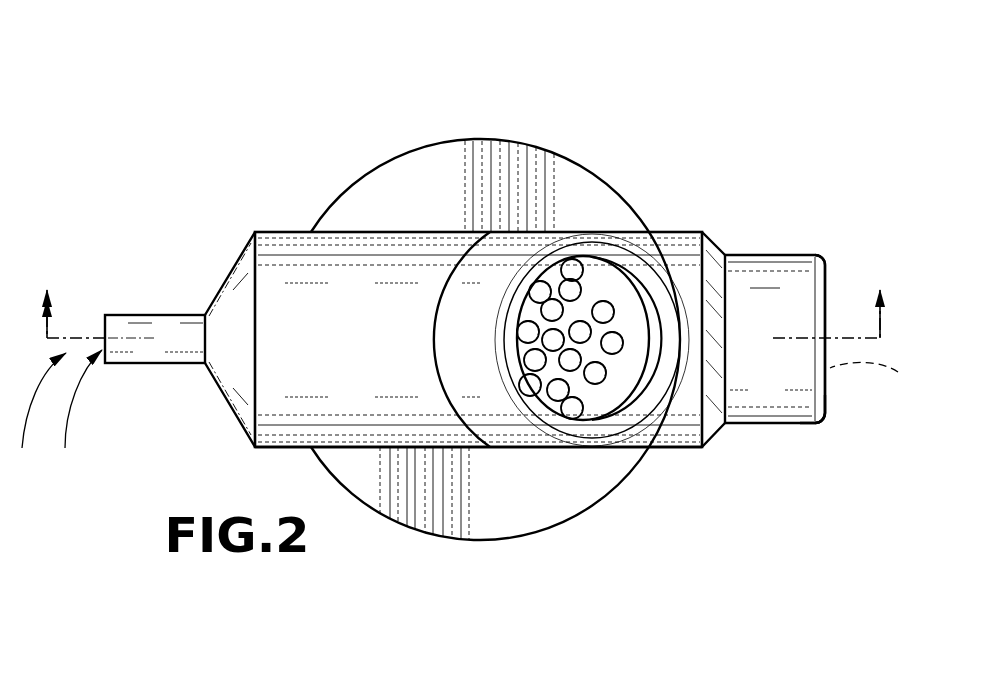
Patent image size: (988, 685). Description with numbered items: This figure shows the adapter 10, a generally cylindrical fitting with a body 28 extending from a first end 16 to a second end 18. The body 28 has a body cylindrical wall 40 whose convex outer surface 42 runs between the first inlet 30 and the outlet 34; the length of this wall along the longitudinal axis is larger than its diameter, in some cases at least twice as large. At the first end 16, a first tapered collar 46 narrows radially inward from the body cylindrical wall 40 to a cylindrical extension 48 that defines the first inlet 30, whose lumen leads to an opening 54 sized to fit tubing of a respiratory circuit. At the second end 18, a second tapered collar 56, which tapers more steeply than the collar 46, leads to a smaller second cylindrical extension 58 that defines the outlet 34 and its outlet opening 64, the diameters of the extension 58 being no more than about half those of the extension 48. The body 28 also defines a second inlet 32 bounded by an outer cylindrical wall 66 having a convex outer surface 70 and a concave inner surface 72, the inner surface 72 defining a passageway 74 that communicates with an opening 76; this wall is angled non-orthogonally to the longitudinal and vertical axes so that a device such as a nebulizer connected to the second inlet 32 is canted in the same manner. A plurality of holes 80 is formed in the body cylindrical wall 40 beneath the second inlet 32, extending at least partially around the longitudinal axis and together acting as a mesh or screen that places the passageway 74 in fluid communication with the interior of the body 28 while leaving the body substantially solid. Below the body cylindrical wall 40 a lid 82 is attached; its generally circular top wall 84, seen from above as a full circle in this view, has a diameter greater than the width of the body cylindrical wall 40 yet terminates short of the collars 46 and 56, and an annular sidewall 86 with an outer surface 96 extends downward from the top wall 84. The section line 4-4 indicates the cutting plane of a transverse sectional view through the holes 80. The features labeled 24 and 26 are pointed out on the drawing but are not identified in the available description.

The adapter 10 is at (719, 121).
The first end 16 is at (838, 280).
The second end 18 is at (38, 415).
The lower housing portion 24 is at (477, 556).
The upper housing portion 26 is at (477, 118).
The body 28 is at (415, 345).
The first inlet 30 is at (832, 396).
The second inlet 32 is at (655, 270).
The outlet 34 is at (77, 399).
The body cylindrical wall 40 is at (284, 228).
The convex outer surface 42 is at (307, 347).
The first tapered collar 46 is at (713, 433).
The cylindrical extension 48 is at (789, 251).
The opening 54 is at (879, 372).
The second tapered collar 56 is at (226, 280).
The second cylindrical extension 58 is at (152, 313).
The outlet opening 64 is at (103, 328).
The outer cylindrical wall 66 is at (518, 452).
The convex outer surface 70 is at (487, 347).
The concave inner surface 72 is at (633, 314).
The passageway 74 is at (627, 280).
The opening 76 is at (663, 304).
The holes 80 is at (568, 392).
The lid 82 is at (490, 203).
The circular top wall 84 is at (432, 184).
The annular sidewall 86 is at (352, 176).
The outer surface 96 is at (520, 540).
The section line 4- 4 is at (464, 297).